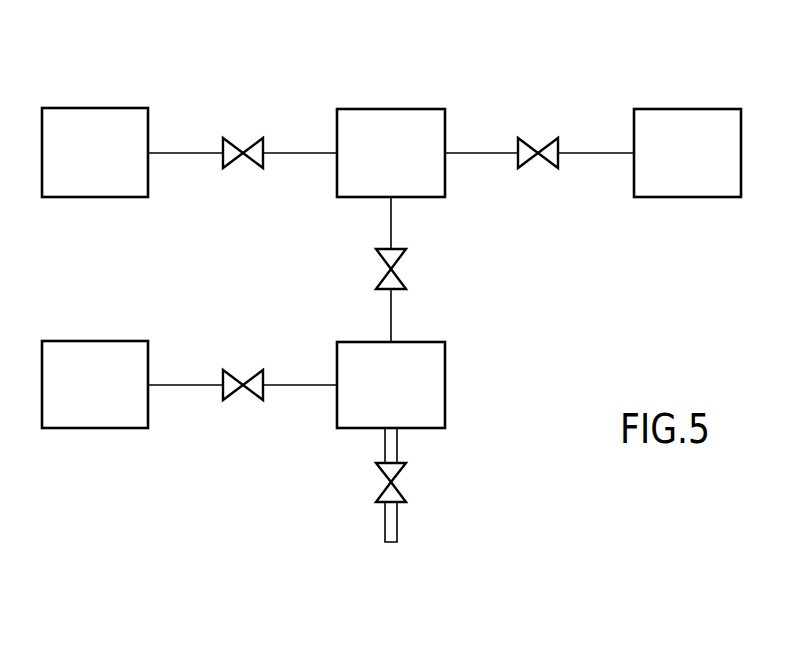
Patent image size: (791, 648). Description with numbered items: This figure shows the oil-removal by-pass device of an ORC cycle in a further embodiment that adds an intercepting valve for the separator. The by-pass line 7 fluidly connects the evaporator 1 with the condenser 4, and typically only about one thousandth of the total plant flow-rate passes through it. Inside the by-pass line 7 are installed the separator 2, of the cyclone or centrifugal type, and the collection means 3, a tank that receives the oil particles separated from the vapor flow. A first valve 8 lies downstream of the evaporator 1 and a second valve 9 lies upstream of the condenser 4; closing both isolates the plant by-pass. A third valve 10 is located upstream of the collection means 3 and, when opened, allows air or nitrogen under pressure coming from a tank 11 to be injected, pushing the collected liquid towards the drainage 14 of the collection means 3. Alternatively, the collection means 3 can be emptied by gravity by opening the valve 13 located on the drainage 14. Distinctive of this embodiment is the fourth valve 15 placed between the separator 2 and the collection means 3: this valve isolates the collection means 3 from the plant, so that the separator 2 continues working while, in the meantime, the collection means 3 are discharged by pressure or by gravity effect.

The evaporator 1 is at (87, 167).
The separator 2 is at (382, 167).
The collection means 3 is at (382, 399).
The condenser 4 is at (678, 167).
The by-pass line 7 is at (410, 70).
The first valve 8 is at (230, 145).
The second valve 9 is at (522, 138).
The third valve 10 is at (233, 373).
The tank 11 is at (80, 399).
The valve 13 is at (397, 487).
The drainage 14 is at (384, 532).
The fourth valve 15 is at (396, 273).